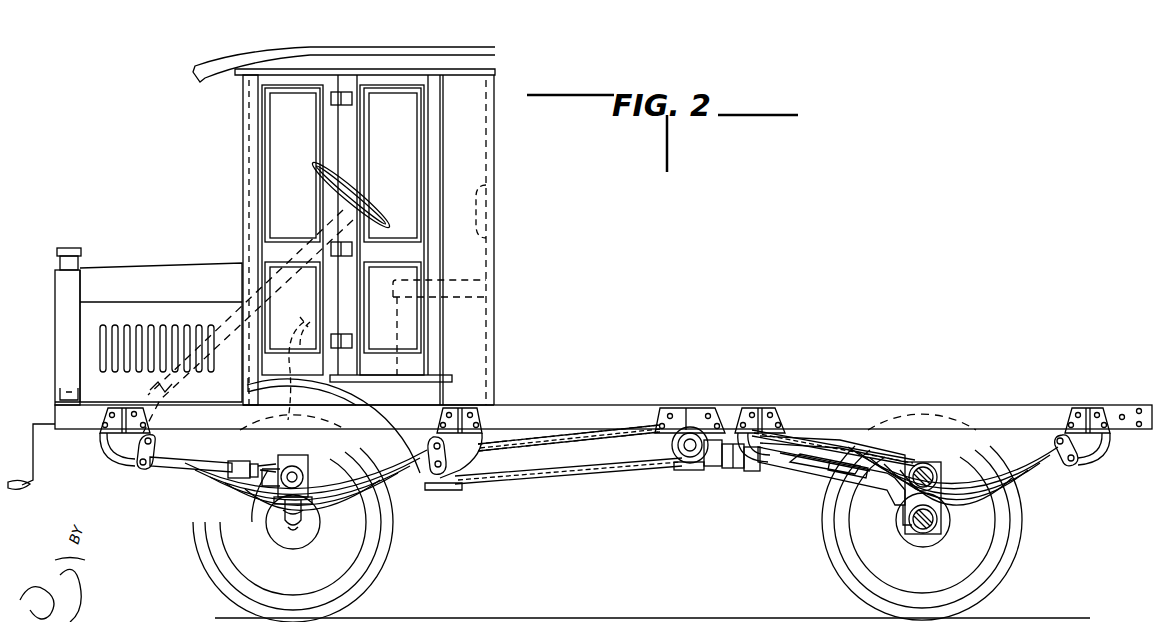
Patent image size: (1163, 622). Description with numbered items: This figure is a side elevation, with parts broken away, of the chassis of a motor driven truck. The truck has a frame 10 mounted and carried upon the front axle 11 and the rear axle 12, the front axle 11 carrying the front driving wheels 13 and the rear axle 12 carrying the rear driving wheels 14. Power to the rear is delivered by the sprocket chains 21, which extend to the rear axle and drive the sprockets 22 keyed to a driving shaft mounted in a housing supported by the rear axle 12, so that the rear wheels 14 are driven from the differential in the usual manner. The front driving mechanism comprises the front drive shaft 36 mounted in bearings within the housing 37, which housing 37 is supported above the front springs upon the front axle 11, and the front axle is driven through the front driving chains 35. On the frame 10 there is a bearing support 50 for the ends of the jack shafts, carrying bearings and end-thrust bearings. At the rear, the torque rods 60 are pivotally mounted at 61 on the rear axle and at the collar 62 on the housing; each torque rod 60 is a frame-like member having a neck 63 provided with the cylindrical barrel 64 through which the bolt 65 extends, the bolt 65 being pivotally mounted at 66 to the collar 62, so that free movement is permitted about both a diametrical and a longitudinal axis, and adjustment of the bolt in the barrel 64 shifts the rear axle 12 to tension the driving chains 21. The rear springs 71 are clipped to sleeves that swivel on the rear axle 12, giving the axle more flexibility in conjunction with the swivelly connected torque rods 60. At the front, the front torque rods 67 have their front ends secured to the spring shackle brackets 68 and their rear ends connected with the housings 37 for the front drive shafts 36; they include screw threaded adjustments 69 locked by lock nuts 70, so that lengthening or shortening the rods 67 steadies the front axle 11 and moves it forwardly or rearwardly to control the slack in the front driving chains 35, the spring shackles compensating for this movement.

The frame 10 is at (551, 413).
The front axle 11 is at (295, 530).
The rear axle 12 is at (935, 528).
The front driving wheels 13 is at (222, 582).
The rear driving wheels 14 is at (1012, 580).
The sprocket chains 21 is at (818, 437).
The sprockets 22 is at (917, 463).
The front driving chains 35 is at (528, 481).
The front drive shaft 36 is at (275, 467).
The housing 37 is at (320, 496).
The bearing support 50 is at (668, 449).
The torque rods 60 is at (835, 487).
The pivotal mounting 61 is at (905, 518).
The collar 62 is at (687, 470).
The neck 63 is at (745, 430).
The cylindrical barrel 64 is at (757, 470).
The bolt 65 is at (737, 470).
The pivotal mounting of bolt 66 is at (712, 466).
The front torque rods 67 is at (163, 470).
The spring shackle brackets 68 is at (115, 449).
The screw threaded adjustments 69 is at (256, 479).
The lock nuts 70 is at (252, 522).
The rear springs 71 is at (1032, 476).